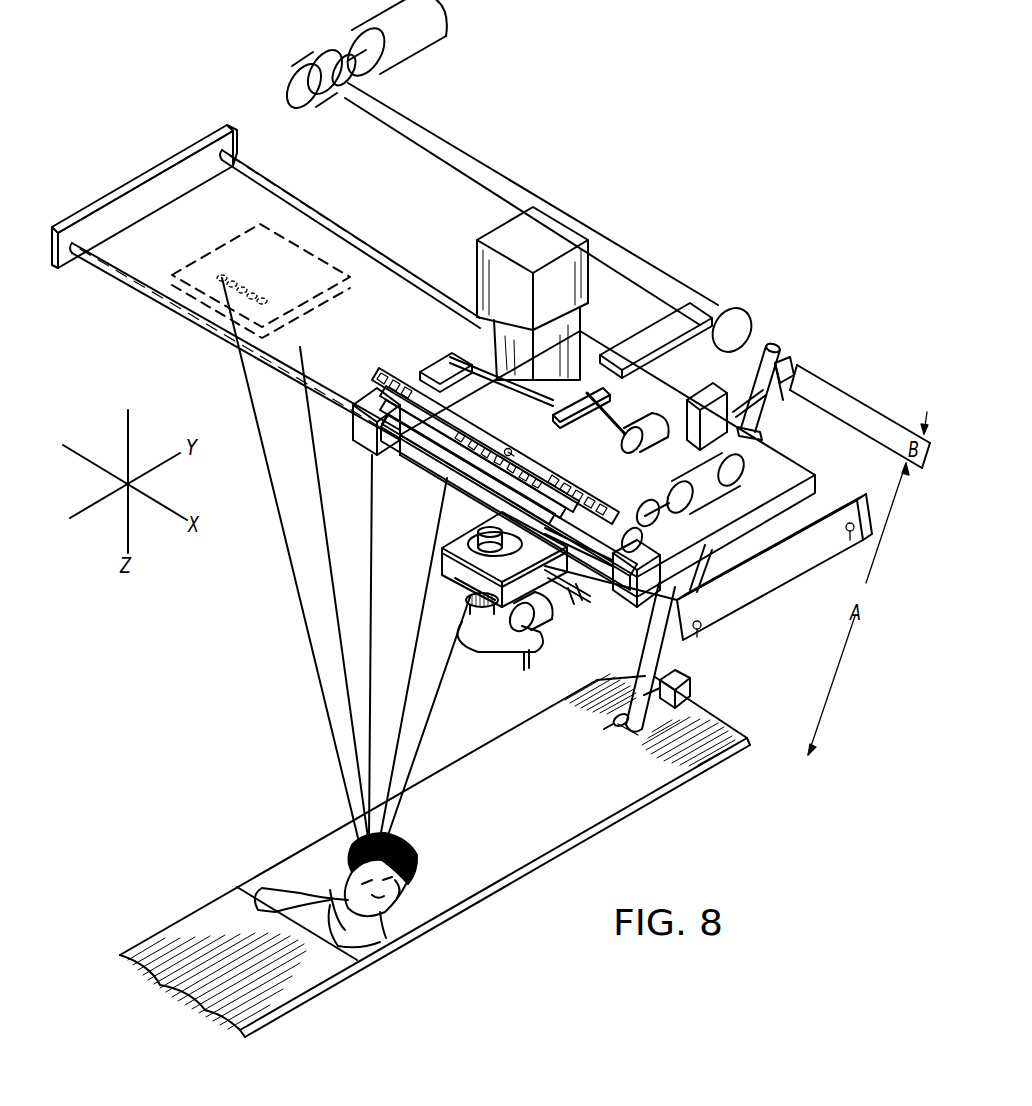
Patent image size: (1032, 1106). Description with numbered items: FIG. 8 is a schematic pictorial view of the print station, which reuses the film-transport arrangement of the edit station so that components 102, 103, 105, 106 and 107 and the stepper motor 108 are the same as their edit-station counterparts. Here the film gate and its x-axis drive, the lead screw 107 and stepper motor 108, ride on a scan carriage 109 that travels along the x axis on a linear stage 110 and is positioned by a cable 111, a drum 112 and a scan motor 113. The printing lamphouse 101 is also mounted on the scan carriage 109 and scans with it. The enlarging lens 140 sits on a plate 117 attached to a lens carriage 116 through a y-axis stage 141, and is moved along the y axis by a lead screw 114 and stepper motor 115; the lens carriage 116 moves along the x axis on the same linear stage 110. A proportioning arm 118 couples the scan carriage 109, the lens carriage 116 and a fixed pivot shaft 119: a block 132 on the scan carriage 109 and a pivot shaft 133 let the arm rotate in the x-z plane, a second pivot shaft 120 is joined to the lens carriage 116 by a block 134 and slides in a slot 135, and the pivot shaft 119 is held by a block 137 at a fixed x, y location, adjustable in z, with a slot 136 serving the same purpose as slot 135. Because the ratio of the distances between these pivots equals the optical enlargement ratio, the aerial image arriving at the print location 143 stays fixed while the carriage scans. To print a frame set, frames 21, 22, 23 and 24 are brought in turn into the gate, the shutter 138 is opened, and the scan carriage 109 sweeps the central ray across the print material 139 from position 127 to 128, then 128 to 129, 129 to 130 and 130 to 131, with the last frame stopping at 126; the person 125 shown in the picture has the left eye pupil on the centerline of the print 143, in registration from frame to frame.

The frame 21 is at (443, 530).
The frame 22 is at (470, 503).
The frame 23 is at (448, 483).
The frame 24 is at (458, 462).
The printing lamphouse 101 is at (487, 236).
The component 102 is at (660, 487).
The component 103 is at (720, 468).
The component 105 is at (437, 452).
The component 106 is at (525, 452).
The lead screw 107 is at (590, 420).
The stepper motor 108 is at (661, 403).
The scan carriage 109 is at (813, 475).
The linear stage 110 is at (155, 300).
The cable 111 is at (612, 240).
The drum 112 is at (318, 50).
The scan motor 113 is at (437, 22).
The lead screw 114 is at (565, 598).
The stepper motor 115 is at (537, 628).
The lens carriage 116 is at (440, 565).
The plate 117 is at (443, 583).
The proportioning arm 118 is at (675, 650).
The pivot shaft 119 is at (618, 724).
The pivot shaft 120 is at (797, 372).
The image of subject 125 is at (390, 907).
The position 126 is at (222, 277).
The position 127 is at (425, 733).
The position 128 is at (404, 708).
The position 129 is at (370, 661).
The position 130 is at (338, 623).
The position 131 is at (296, 585).
The block 132 is at (700, 398).
The pivot shaft 133 is at (786, 356).
The block 134 is at (757, 425).
The slot 135 is at (760, 410).
The slot 136 is at (624, 724).
The block 137 is at (690, 683).
The shutter 138 is at (486, 652).
The print material 139 is at (292, 1007).
The enlarging lens 140 is at (466, 603).
The y-axis stage 141 is at (552, 600).
The print location 143 is at (476, 897).